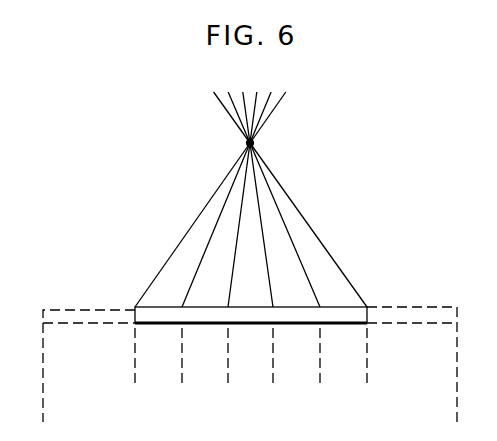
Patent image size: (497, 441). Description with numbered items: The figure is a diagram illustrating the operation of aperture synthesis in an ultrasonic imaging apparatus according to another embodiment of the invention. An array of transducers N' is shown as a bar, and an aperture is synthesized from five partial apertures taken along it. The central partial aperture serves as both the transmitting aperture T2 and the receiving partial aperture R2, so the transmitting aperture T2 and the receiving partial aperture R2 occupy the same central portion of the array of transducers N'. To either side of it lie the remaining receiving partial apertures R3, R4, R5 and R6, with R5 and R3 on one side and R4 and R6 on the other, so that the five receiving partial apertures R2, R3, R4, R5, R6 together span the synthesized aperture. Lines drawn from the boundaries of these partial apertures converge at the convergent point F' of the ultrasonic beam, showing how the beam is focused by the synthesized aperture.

The convergent point of the ultrasonic beam F' is at (251, 199).
The array of transducers N' is at (250, 409).
The transmitting aperture T2 is at (228, 347).
The receiving partial aperture R2 is at (273, 380).
The receiving partial aperture R3 is at (182, 380).
The receiving partial aperture R4 is at (320, 380).
The receiving partial aperture R5 is at (182, 380).
The receiving partial aperture R6 is at (367, 380).